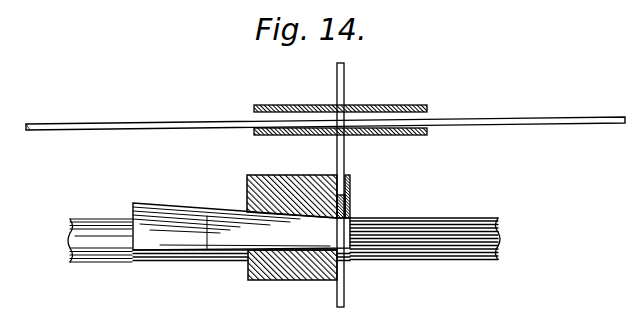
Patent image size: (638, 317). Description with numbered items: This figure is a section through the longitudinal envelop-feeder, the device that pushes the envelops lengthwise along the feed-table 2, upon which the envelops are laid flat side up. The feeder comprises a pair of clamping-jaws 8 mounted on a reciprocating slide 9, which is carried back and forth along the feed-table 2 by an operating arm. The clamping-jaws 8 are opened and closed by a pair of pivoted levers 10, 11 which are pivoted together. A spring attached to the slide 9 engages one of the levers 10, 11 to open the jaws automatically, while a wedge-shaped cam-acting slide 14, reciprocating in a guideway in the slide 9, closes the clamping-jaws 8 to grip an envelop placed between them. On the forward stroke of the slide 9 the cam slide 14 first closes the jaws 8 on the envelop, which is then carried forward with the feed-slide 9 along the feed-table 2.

The feed-table 2 is at (547, 118).
The clamping-jaws 8 is at (374, 105).
The reciprocating slide 9 is at (275, 177).
The pivoted lever 10 is at (344, 80).
The pivoted lever 11 is at (344, 164).
The wedge-shaped cam-acting slide 14 is at (174, 219).